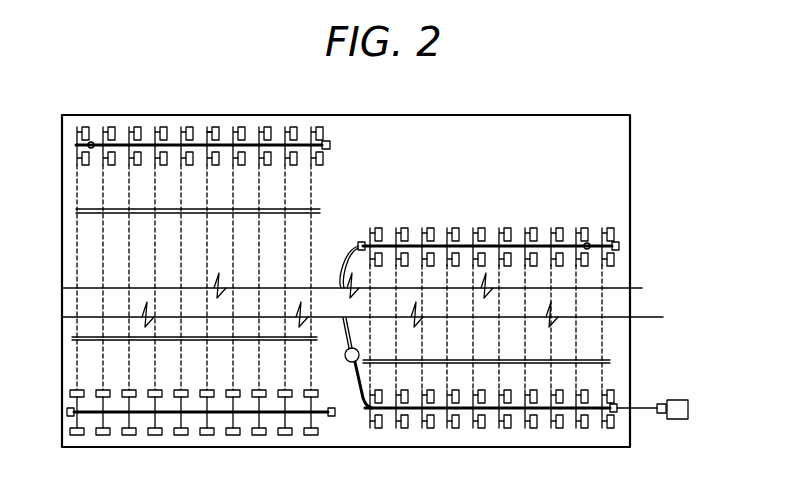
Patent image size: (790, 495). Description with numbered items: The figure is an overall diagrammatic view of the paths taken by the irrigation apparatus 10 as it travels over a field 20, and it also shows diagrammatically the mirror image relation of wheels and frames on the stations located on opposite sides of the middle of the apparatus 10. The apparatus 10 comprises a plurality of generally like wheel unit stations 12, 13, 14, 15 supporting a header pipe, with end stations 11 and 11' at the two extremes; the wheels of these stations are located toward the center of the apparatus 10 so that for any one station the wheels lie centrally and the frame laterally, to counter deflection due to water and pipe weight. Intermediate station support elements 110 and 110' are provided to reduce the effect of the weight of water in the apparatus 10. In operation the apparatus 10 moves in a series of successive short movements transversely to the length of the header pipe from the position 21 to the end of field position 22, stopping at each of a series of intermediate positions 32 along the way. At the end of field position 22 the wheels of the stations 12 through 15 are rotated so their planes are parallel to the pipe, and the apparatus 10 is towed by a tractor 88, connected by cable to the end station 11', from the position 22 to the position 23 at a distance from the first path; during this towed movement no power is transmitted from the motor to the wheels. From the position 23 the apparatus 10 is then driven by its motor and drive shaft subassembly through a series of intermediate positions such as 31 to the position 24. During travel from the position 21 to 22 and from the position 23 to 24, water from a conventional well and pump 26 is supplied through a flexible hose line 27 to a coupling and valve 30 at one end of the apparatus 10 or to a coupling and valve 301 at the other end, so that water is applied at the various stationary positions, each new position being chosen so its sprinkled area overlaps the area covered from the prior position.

The apparatus 10 is at (205, 126).
The end station 11 is at (364, 283).
The end station 11' is at (490, 168).
The wheel unit station 12 is at (211, 139).
The wheel unit station 13 is at (238, 128).
The wheel unit station 14 is at (258, 130).
The wheel unit station 15 is at (283, 134).
The field 20 is at (62, 206).
The position 21 is at (76, 144).
The end of field position 22 is at (82, 438).
The position 23 is at (420, 436).
The position 24 is at (585, 228).
The well and pump 26 is at (344, 363).
The flexible hose line 27 is at (342, 275).
The coupling and valve 30 is at (329, 140).
The coupling and valve 301 is at (361, 241).
The intermediate position 31 is at (610, 361).
The intermediate positions 32 is at (72, 338).
The tractor 88 is at (687, 401).
The intermediate station support element 110 is at (110, 116).
The intermediate station support element 110' is at (605, 220).